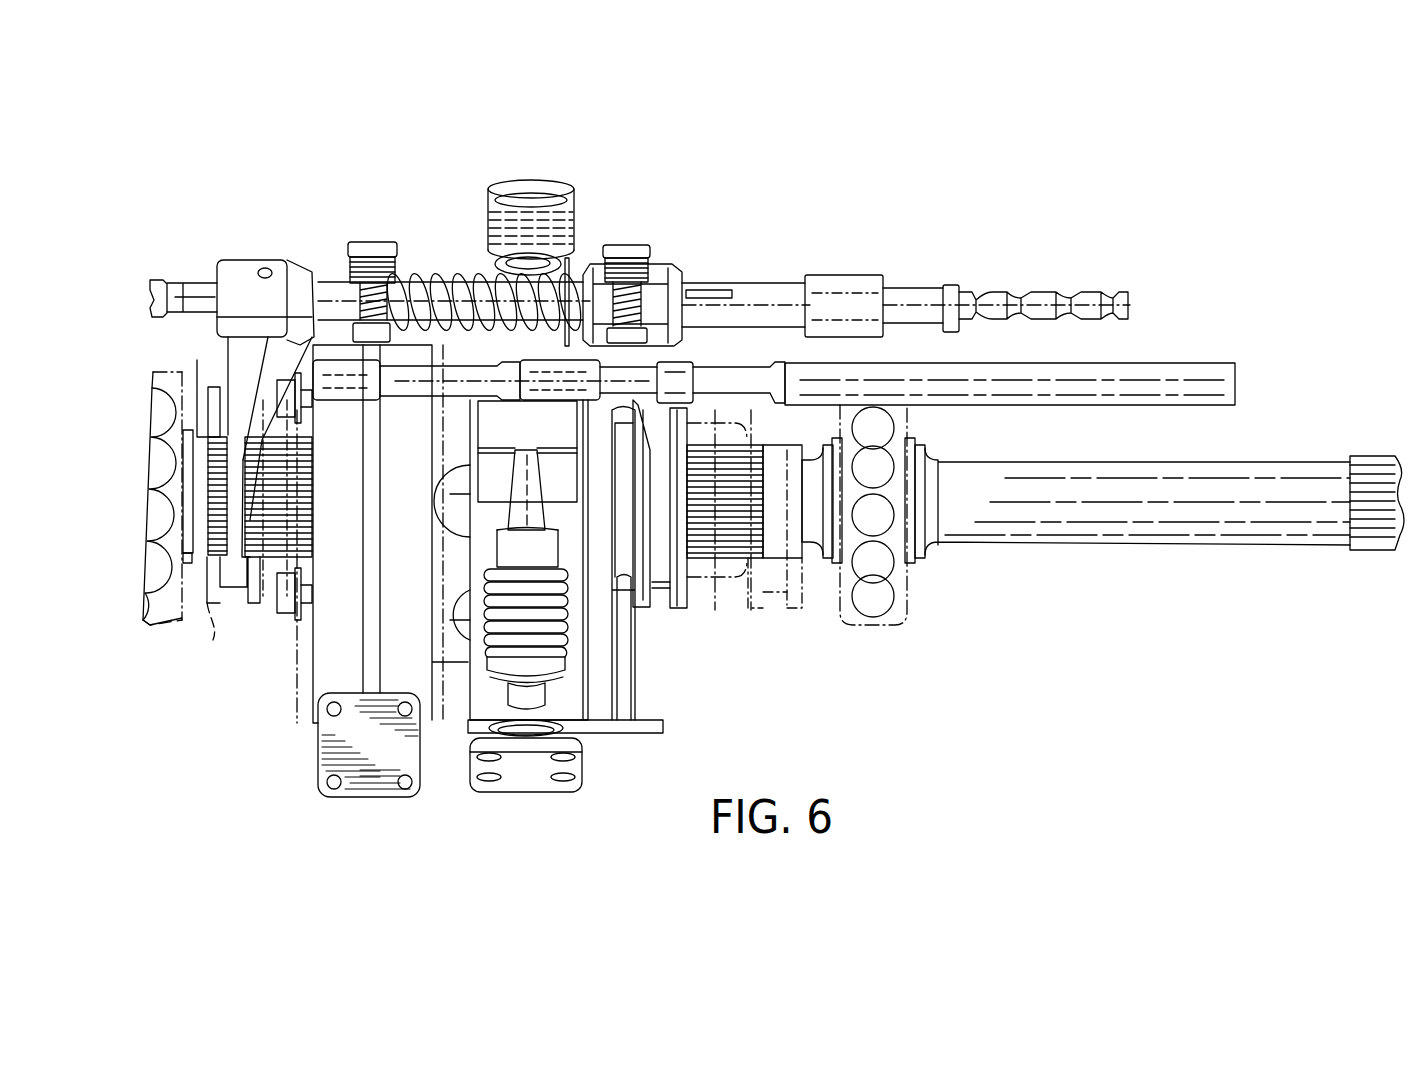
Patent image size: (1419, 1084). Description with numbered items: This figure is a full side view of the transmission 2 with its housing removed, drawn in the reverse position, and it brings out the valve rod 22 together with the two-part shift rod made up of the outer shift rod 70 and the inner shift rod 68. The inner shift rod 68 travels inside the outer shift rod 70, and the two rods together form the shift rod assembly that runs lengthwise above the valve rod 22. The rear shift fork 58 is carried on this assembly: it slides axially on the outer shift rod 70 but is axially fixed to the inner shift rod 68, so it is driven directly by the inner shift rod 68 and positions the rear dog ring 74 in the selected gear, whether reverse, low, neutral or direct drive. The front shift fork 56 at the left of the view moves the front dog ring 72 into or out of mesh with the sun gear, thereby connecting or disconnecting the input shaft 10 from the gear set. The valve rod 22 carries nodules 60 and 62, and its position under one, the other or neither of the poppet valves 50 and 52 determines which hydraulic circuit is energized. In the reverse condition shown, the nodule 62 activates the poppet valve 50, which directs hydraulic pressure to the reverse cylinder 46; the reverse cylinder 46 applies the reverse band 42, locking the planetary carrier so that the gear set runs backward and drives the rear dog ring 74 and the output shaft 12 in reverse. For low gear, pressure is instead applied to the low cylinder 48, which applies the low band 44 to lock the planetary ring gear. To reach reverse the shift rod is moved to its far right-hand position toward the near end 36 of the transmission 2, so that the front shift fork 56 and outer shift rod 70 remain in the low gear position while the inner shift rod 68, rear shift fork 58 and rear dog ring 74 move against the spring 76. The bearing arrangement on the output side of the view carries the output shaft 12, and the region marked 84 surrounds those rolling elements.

The transmission 2 is at (1028, 193).
The input shaft 10 is at (201, 410).
The output shaft 12 is at (1117, 550).
The valve rod 22 is at (1196, 364).
The near end 36 is at (1286, 622).
The reverse band 42 is at (323, 672).
The low band 44 is at (480, 704).
The reverse cylinder 46 is at (330, 752).
The low cylinder 48 is at (523, 777).
The poppet valve 50 is at (383, 300).
The poppet valve 52 is at (685, 373).
The front shift fork 56 is at (246, 259).
The rear shift fork 58 is at (679, 270).
The nodule 60 is at (642, 266).
The nodule 62 is at (330, 373).
The inner shift rod 68 is at (909, 290).
The outer shift rod 70 is at (775, 283).
The front dog ring 72 is at (213, 642).
The rear dog ring 74 is at (680, 608).
The spring 76 is at (452, 276).
The bearing 84 is at (859, 672).